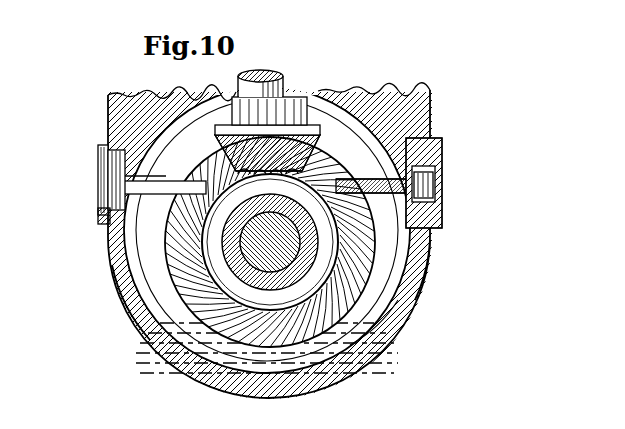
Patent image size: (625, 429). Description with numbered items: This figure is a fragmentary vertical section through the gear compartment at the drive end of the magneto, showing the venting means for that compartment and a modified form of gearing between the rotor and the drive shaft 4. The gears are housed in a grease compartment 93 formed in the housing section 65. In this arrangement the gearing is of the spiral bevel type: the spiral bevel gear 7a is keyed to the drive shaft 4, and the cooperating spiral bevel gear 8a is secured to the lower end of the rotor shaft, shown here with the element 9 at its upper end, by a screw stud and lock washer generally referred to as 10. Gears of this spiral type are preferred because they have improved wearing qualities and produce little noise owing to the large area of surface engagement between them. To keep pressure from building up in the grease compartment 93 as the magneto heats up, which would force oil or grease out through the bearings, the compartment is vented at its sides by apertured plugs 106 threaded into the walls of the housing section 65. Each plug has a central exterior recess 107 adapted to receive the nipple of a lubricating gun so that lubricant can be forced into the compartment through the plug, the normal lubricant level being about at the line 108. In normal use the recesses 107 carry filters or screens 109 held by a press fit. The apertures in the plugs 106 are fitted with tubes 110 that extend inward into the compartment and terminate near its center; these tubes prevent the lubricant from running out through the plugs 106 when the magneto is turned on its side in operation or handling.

The drive shaft 4 is at (290, 250).
The spiral bevel gear 7a is at (360, 325).
The spiral bevel gear 8a is at (330, 146).
The pinion shaft 9 is at (295, 81).
The screw stud and lock washer 10 is at (367, 191).
The housing section 65 is at (128, 314).
The grease compartment 93 is at (427, 267).
The apertured plugs 106 is at (100, 150).
The exterior recesses 107 is at (444, 205).
The lubricant level line 108 is at (357, 322).
The filters or screens 109 is at (433, 183).
The tubes 110 is at (428, 235).